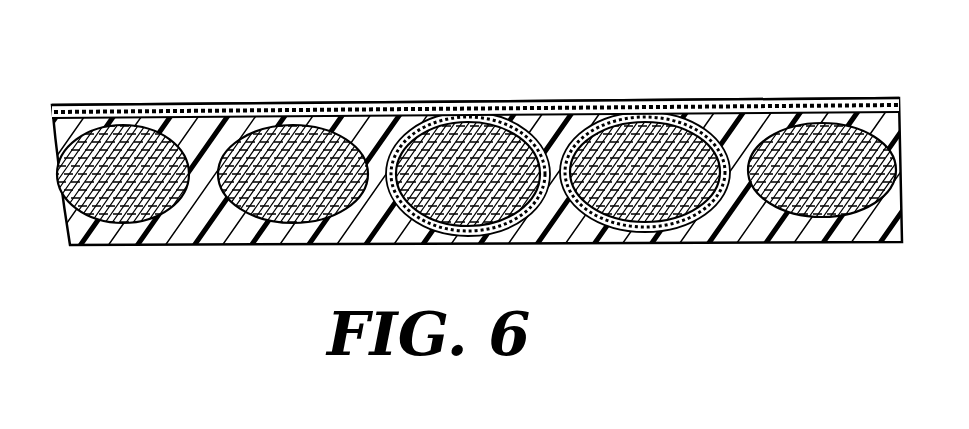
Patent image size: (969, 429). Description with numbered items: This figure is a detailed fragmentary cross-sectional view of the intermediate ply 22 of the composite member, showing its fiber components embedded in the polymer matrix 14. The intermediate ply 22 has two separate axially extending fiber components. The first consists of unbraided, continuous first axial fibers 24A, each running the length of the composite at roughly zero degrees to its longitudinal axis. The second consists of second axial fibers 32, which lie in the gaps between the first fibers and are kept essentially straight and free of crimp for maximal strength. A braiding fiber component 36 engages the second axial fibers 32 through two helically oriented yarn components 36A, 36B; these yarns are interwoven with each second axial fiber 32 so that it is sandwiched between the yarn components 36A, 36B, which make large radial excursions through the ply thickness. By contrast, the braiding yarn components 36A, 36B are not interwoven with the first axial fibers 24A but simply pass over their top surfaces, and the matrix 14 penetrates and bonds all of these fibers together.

The intermediate ply 22 is at (531, 79).
The matrix 14 is at (370, 215).
The first axial fibers 24A is at (157, 193).
The second axial fibers 32 is at (528, 215).
The braiding fiber component 36 is at (475, 91).
The first braiding yarn component 36A is at (393, 103).
The second braiding yarn component 36B is at (412, 104).